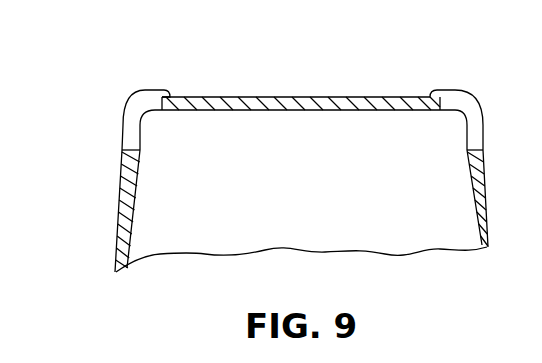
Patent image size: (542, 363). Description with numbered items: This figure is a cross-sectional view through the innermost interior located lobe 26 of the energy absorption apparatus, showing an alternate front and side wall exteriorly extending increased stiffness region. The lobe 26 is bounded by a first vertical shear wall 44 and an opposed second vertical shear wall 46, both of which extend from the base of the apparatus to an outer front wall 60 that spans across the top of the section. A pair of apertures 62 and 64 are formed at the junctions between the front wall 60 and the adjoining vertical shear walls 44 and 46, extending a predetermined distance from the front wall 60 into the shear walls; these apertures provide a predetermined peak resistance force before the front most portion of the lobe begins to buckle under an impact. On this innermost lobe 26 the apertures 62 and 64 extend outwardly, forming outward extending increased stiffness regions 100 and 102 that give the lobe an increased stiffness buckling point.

The innermost interior located lobe 26 is at (379, 205).
The first vertical shear wall 44 is at (478, 212).
The second vertical shear wall 46 is at (118, 250).
The front wall 60 is at (302, 104).
The aperture 62 is at (157, 90).
The aperture 64 is at (453, 90).
The outward extending increased stiffness region 100 is at (122, 151).
The outward extending increased stiffness region 102 is at (486, 152).